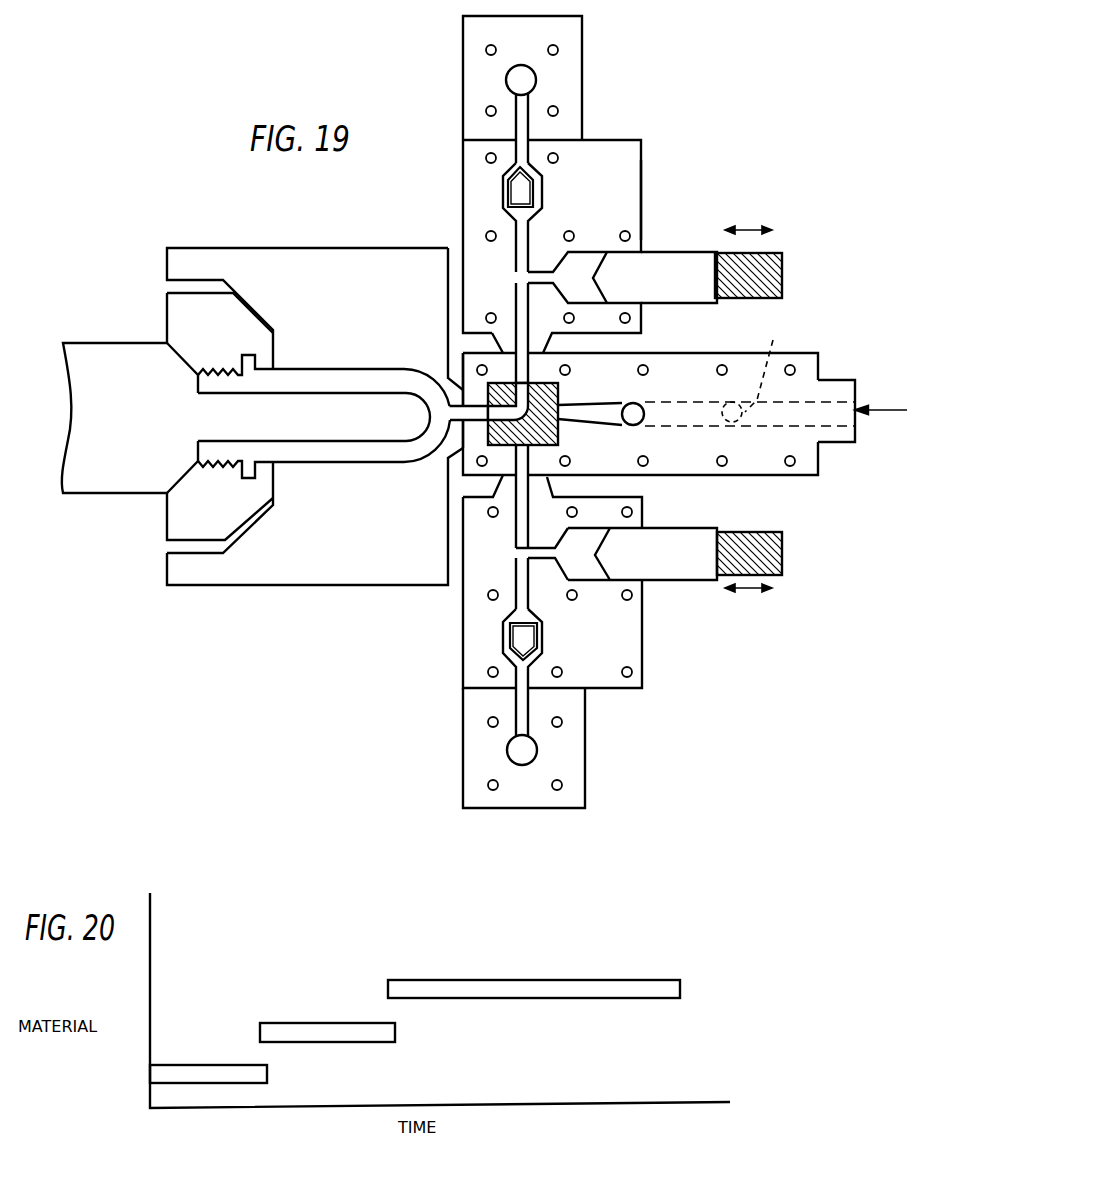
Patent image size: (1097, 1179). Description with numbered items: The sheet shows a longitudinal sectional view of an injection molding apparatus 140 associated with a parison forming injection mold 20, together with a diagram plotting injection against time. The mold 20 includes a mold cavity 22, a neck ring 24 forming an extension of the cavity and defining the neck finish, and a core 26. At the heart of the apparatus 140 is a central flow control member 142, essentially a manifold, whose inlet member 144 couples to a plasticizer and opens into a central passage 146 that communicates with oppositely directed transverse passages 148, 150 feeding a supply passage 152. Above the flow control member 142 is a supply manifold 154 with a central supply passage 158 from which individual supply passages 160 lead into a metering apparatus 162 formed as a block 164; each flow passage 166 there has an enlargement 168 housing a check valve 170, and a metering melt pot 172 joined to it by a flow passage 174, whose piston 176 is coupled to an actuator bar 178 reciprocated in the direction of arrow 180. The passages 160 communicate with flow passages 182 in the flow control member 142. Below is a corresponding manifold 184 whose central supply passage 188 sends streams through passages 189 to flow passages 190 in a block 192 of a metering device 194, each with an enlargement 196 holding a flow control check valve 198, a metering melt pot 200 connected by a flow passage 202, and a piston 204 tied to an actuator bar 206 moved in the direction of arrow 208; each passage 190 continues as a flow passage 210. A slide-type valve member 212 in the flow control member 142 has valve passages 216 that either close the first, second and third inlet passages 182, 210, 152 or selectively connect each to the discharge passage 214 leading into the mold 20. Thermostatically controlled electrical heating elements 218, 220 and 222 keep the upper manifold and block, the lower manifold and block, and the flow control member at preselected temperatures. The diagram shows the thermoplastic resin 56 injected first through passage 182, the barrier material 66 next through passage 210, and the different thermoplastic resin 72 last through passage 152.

In FIG. 19, the injection mold 20 is at (338, 245).
In FIG. 19, the mold cavity 22 is at (377, 455).
In FIG. 19, the neck ring 24 is at (175, 524).
In FIG. 19, the core 26 is at (322, 430).
In FIG. 19, the injection molding apparatus 140 is at (730, 170).
In FIG. 19, the central flow control member 142 is at (822, 355).
In FIG. 19, the inlet member 144 is at (848, 380).
In FIG. 19, the central passage 146 is at (772, 365).
In FIG. 19, the transverse passage 148 is at (745, 414).
In FIG. 19, the transverse passage 150 is at (634, 427).
In FIG. 19, the supply passage 152 is at (597, 404).
In FIG. 19, the supply manifold 154 is at (582, 95).
In FIG. 19, the central supply passage 158 is at (506, 80).
In FIG. 19, the supply passage 160 is at (525, 103).
In FIG. 19, the metering apparatus 162 is at (648, 153).
In FIG. 19, the block 164 is at (642, 185).
In FIG. 19, the flow passage 166 is at (530, 242).
In FIG. 19, the enlargement 168 is at (543, 188).
In FIG. 19, the check valve 170 is at (506, 192).
In FIG. 19, the metering melt pot 172 is at (583, 258).
In FIG. 19, the flow passage 174 is at (542, 275).
In FIG. 19, the piston 176 is at (675, 257).
In FIG. 19, the actuator bar 178 is at (782, 272).
In FIG. 19, the arrow 180 is at (747, 228).
In FIG. 19, the flow passage 182 is at (520, 364).
In FIG. 19, the manifold 184 is at (587, 792).
In FIG. 19, the central supply passage 188 is at (508, 757).
In FIG. 19, the passage 189 is at (517, 727).
In FIG. 19, the flow passage 190 is at (516, 540).
In FIG. 19, the block 192 is at (645, 678).
In FIG. 19, the metering device 194 is at (458, 668).
In FIG. 19, the enlargement 196 is at (545, 635).
In FIG. 19, the flow control check valve 198 is at (528, 658).
In FIG. 19, the metering melt pot 200 is at (597, 572).
In FIG. 19, the flow passage 202 is at (540, 563).
In FIG. 19, the piston 204 is at (673, 570).
In FIG. 19, the actuator bar 206 is at (760, 533).
In FIG. 19, the arrow 208 is at (750, 596).
In FIG. 19, the continuation flow passage 210 is at (474, 500).
In FIG. 19, the valve member 212 is at (560, 437).
In FIG. 19, the discharge passage 214 is at (482, 428).
In FIG. 19, the valve passage 216 is at (508, 391).
In FIG. 19, the electrical heating elements 218 is at (486, 50).
In FIG. 19, the electrical heating elements 220 is at (487, 599).
In FIG. 19, the electrical heating elements 222 is at (725, 365).
In FIG. 20, the thermoplastic resin 56 is at (190, 1067).
In FIG. 20, the barrier material 66 is at (320, 1030).
In FIG. 20, the thermoplastic resin 72 is at (537, 982).